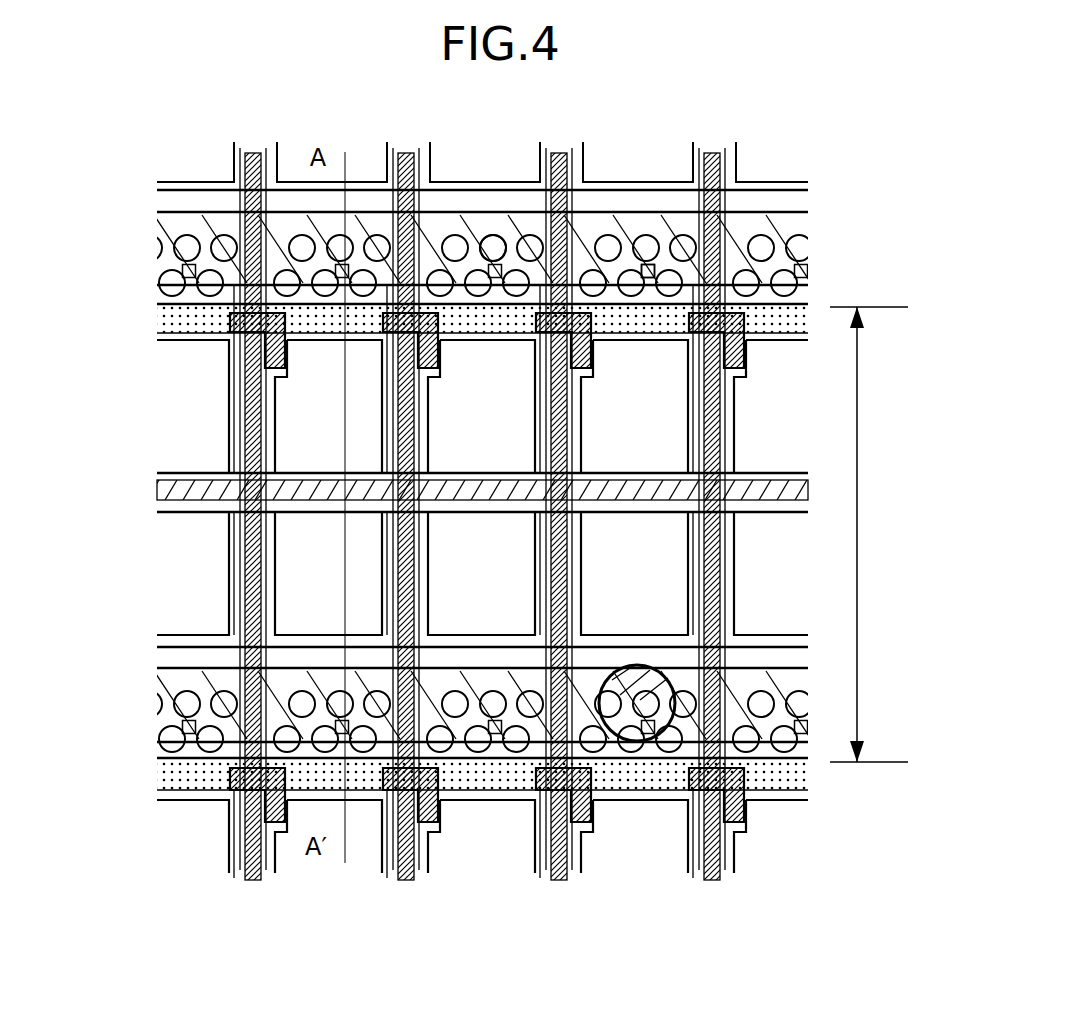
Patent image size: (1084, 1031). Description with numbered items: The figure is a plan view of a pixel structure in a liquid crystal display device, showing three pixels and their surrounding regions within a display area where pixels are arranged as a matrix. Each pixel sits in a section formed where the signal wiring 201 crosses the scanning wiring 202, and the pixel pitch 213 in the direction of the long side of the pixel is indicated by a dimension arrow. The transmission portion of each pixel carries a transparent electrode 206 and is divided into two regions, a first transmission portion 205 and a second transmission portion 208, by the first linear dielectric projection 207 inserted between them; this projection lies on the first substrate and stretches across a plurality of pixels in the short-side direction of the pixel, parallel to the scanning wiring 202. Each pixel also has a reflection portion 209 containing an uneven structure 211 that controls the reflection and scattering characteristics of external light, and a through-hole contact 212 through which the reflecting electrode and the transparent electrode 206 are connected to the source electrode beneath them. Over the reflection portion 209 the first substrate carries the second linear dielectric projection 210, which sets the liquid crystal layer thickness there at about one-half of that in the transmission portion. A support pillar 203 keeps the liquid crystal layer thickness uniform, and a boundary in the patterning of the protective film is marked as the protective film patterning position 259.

The signal wiring 201 is at (392, 872).
The scanning wiring 202 is at (503, 778).
The support pillar 203 is at (648, 755).
The first transmission portion 205 is at (295, 423).
The transparent electrode 206 is at (243, 412).
The first linear dielectric projection 207 is at (167, 477).
The second transmission portion 208 is at (295, 593).
The reflection portion 209 is at (295, 660).
The second linear dielectric projection 210 is at (167, 668).
The uneven structure 211 is at (487, 250).
The through-hole contact 212 is at (643, 252).
The pixel pitch 213 is at (858, 582).
The protective film patterning position 259 is at (727, 447).